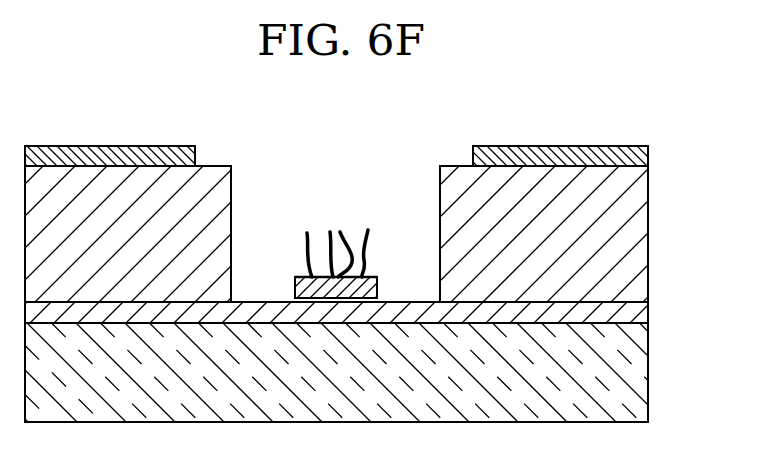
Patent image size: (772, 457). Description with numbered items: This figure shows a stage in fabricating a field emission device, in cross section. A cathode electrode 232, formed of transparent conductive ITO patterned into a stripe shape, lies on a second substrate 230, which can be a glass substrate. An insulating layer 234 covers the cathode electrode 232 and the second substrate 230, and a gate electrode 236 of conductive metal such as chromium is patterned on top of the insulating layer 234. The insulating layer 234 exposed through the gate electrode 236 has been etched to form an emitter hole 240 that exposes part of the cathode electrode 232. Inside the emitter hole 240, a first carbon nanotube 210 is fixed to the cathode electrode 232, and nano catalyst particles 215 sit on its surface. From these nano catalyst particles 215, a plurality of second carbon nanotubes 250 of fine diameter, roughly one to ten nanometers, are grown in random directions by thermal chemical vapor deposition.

The first carbon nanotube 210 is at (298, 280).
The nano catalyst particles 215 is at (372, 275).
The second substrate 230 is at (632, 388).
The cathode electrode 232 is at (633, 315).
The insulating layer 234 is at (633, 247).
The gate electrode 236 is at (633, 154).
The emitter hole 240 is at (353, 182).
The second carbon nanotubes 250 is at (367, 240).